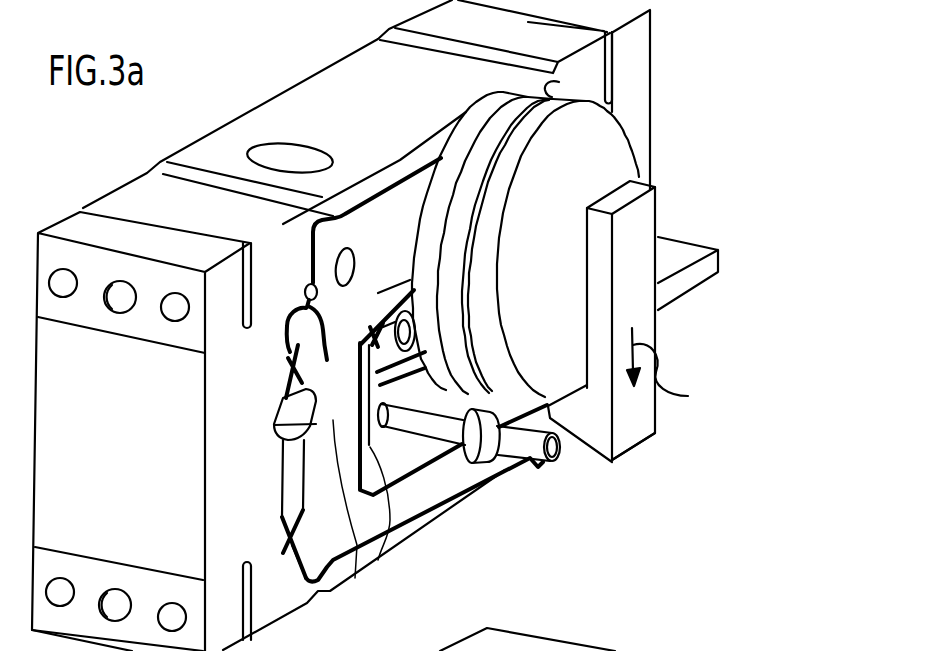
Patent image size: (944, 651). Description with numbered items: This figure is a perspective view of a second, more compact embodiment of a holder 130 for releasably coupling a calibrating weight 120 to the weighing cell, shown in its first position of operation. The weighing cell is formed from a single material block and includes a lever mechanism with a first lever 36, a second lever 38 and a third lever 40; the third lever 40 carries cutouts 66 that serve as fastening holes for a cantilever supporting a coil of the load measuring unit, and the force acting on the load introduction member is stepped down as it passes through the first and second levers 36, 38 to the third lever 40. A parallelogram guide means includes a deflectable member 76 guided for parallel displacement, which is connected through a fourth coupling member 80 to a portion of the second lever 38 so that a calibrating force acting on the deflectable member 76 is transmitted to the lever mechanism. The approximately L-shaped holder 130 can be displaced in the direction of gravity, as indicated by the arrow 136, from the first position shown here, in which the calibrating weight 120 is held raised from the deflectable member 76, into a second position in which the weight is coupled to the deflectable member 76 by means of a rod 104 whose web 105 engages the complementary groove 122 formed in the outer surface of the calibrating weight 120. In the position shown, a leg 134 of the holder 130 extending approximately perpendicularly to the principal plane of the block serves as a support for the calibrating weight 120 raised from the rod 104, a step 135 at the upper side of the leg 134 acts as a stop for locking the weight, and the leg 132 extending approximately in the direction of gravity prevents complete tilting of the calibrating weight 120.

The first lever 36 is at (407, 502).
The second lever 38 is at (427, 456).
The third lever 40 is at (378, 335).
The cutouts 66 is at (335, 373).
The deflectable member 76 is at (378, 560).
The fourth coupling member 80 is at (352, 592).
The rod 104 is at (533, 452).
The web 105 is at (482, 455).
The calibrating weight 120 is at (615, 143).
The groove 122 is at (492, 140).
The holder 130 is at (670, 358).
The leg 132 is at (648, 246).
The leg 134 is at (598, 465).
The step 135 is at (612, 460).
The arrow 136 is at (688, 396).